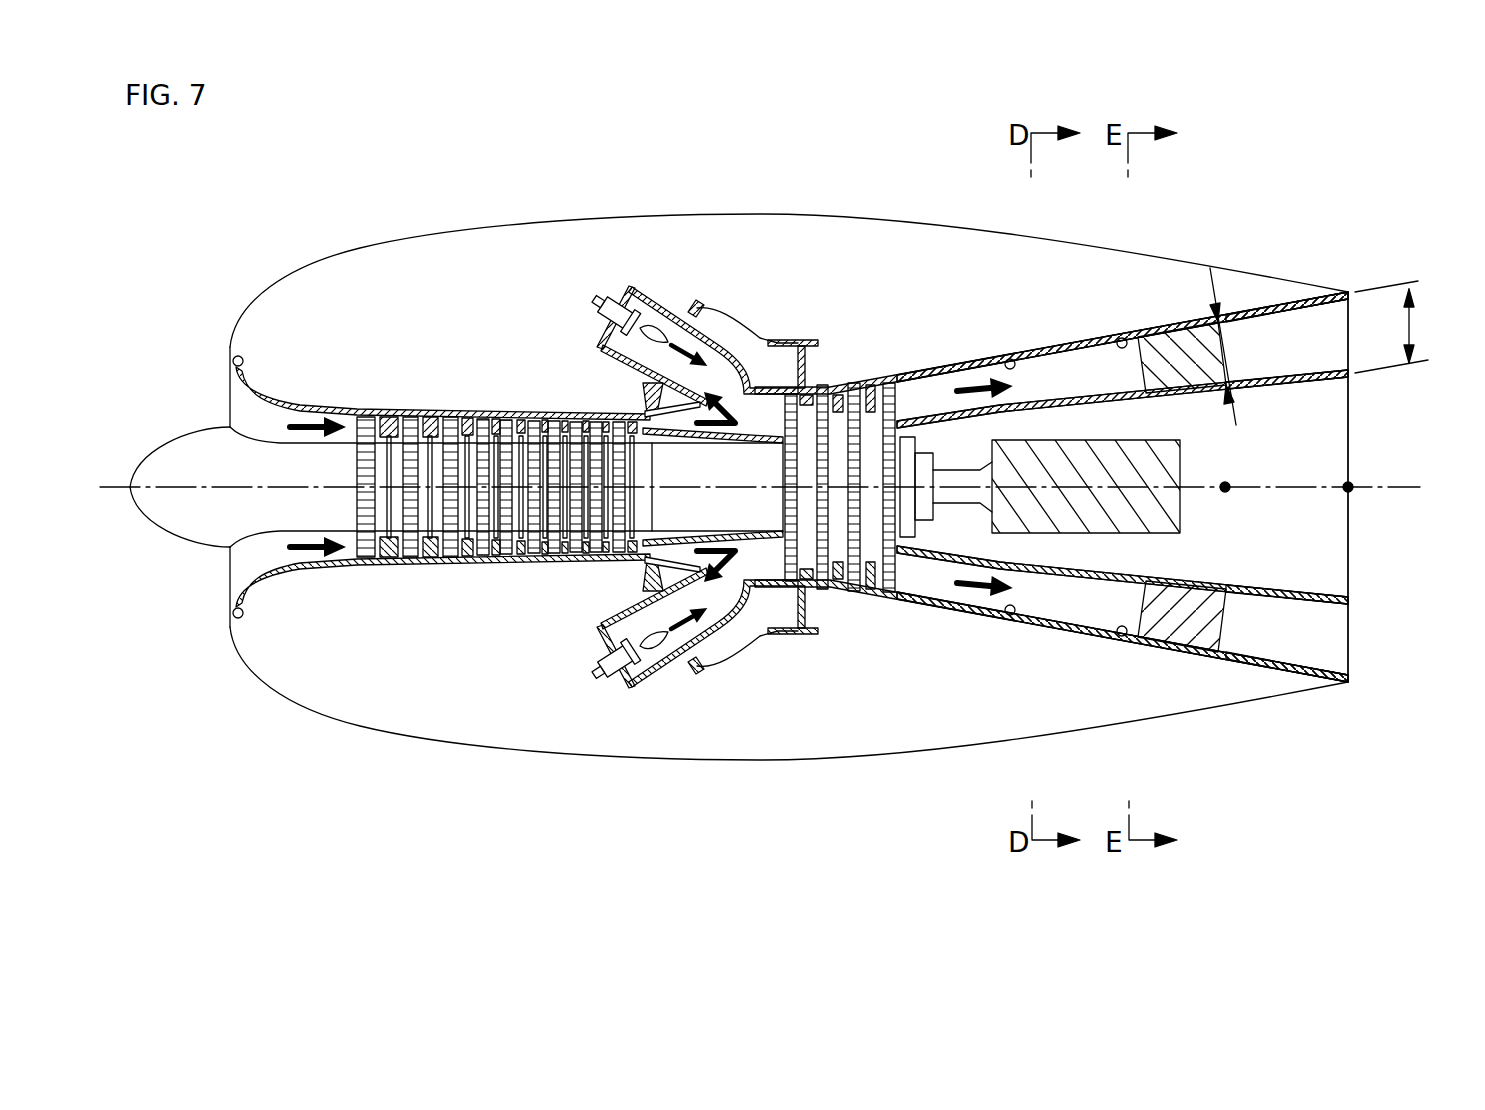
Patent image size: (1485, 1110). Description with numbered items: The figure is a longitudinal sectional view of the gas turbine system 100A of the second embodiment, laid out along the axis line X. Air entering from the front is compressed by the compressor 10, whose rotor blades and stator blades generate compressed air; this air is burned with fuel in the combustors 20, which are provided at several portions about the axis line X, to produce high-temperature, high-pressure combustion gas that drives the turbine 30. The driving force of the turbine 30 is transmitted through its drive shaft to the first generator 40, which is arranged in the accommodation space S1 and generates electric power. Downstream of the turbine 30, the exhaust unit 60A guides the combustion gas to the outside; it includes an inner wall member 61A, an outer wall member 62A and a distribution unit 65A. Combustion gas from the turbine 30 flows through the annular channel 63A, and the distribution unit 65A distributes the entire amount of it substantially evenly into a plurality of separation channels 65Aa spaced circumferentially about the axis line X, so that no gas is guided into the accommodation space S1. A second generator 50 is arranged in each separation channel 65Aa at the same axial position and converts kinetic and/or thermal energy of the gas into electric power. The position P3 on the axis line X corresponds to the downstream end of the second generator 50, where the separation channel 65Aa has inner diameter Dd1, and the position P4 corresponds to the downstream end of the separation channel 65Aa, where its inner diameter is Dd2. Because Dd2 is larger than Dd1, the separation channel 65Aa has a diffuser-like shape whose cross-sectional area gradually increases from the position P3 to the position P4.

The gas turbine system 100A is at (380, 205).
The compressor 10 is at (433, 403).
The combustor 20 is at (595, 298).
The turbine 30 is at (852, 375).
The first generator 40 is at (1060, 535).
The second generator 50 is at (705, 213).
The exhaust unit 60A is at (1075, 332).
The inner wall member 61A is at (1045, 413).
The outer wall member 62A is at (970, 616).
The annular channel 63A is at (1012, 358).
The distribution unit 65A is at (1290, 290).
The separation channel 65Aa is at (1122, 338).
The inner diameter of separation channel at position P3 Dd1 is at (1239, 323).
The inner diameter of separation channel at position P4 Dd2 is at (1417, 327).
The position P3 is at (1230, 483).
The position P4 is at (1352, 483).
The accommodation space S1 is at (1320, 547).
The axis line X is at (116, 493).